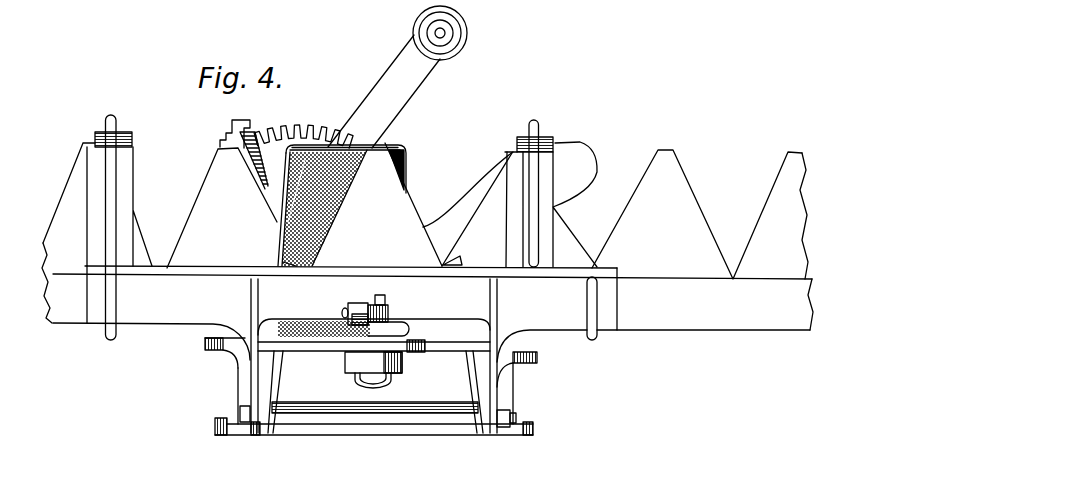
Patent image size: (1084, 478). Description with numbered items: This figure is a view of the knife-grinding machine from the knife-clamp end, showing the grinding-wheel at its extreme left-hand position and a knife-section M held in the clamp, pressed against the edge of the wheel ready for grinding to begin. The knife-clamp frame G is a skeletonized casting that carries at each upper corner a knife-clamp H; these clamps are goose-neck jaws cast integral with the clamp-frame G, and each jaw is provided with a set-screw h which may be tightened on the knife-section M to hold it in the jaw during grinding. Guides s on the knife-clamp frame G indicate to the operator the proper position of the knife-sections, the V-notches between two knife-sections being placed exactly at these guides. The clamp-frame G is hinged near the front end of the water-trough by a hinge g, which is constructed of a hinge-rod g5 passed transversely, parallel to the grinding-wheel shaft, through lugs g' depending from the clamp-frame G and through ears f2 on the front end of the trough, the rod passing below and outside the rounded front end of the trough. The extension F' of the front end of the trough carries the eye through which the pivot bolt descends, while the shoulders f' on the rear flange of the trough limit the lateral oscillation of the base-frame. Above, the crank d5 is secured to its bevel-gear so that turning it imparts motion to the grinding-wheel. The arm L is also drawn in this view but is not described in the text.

The knife-clamp frame G is at (427, 302).
The knife-clamp H is at (133, 173).
The knife-section M is at (360, 204).
The set-screw h is at (296, 191).
The curved arm L is at (510, 184).
The crank d5 is at (423, 80).
The guides s is at (292, 264).
The extension F' is at (386, 341).
The shoulders f' is at (373, 355).
The ears f2 is at (268, 383).
The hinge g is at (373, 395).
The lugs g' is at (385, 376).
The hinge-rod g5 is at (460, 413).